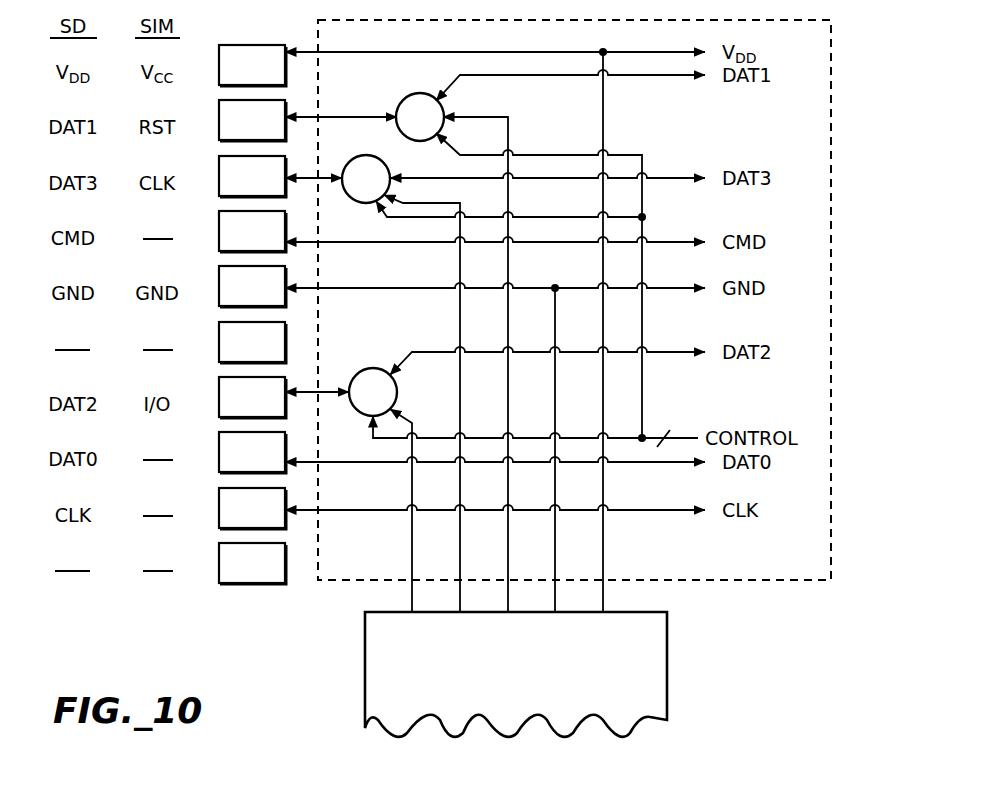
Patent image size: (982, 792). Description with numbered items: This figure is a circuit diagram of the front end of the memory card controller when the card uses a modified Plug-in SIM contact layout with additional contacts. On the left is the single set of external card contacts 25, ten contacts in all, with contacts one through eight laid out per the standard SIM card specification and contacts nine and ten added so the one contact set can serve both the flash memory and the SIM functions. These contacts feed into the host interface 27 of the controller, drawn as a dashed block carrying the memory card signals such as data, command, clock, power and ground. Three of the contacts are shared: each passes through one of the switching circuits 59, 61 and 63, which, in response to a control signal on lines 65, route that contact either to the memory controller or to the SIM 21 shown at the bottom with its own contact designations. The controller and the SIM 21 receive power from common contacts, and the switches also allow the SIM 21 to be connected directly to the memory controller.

The SIM 21 is at (667, 636).
The card contacts 25 is at (252, 600).
The host interface 27 is at (574, 300).
The switching circuit 59 is at (420, 93).
The switching circuit 61 is at (366, 203).
The switching circuit 63 is at (373, 368).
The control signal lines 65 is at (683, 437).